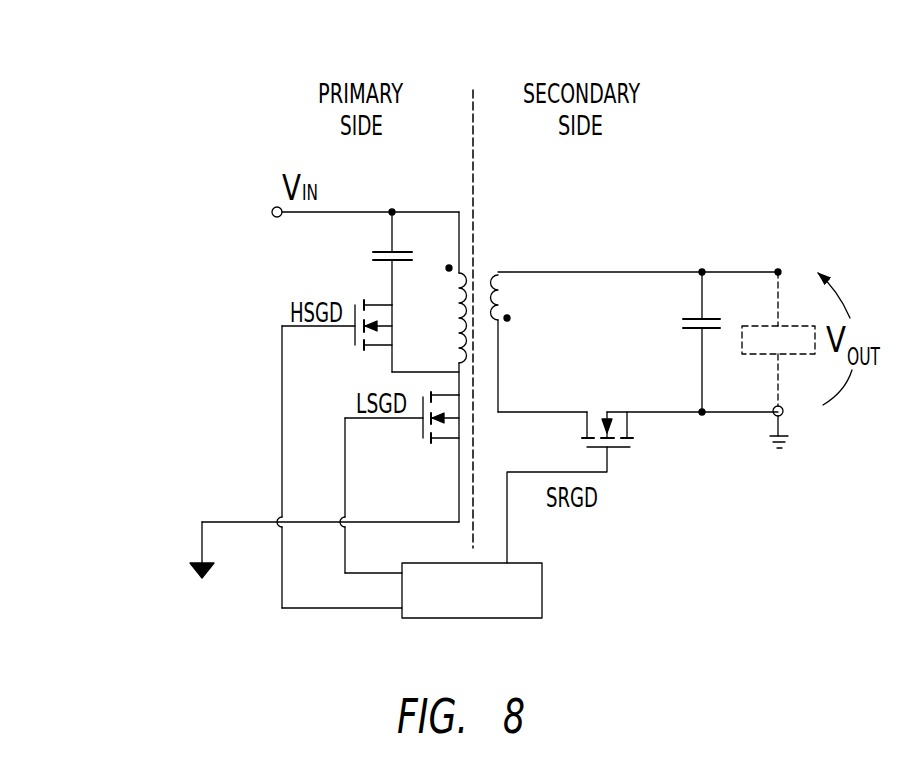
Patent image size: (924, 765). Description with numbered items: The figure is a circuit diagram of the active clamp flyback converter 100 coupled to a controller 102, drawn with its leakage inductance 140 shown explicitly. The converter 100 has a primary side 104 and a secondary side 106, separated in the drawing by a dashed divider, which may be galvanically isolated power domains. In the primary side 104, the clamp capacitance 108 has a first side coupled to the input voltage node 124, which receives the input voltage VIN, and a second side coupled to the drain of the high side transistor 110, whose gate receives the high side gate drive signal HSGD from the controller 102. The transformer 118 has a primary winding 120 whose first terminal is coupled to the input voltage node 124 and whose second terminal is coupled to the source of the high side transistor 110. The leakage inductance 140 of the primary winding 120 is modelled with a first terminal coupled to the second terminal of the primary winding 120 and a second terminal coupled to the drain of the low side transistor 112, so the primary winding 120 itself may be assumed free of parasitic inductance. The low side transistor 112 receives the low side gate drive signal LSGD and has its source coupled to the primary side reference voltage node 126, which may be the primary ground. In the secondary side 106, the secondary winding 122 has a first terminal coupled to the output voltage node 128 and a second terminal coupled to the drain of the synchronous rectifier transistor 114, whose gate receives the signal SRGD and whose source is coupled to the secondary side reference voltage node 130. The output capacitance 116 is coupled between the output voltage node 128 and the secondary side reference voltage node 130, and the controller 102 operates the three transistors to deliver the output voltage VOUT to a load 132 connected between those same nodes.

The active clamp flyback converter 100 is at (772, 178).
The controller 102 is at (542, 592).
The primary side 104 is at (262, 105).
The secondary side 106 is at (683, 105).
The clamp capacitance 108 is at (375, 250).
The high side transistor 110 is at (377, 347).
The low side transistor 112 is at (444, 440).
The synchronous rectifier transistor 114 is at (628, 422).
The output capacitance 116 is at (693, 330).
The transformer 118 is at (488, 248).
The primary winding 120 is at (450, 288).
The secondary winding 122 is at (505, 290).
The input voltage node 124 is at (275, 207).
The primary side reference voltage node 126 is at (199, 562).
The output voltage node 128 is at (780, 270).
The secondary side reference voltage node 130 is at (788, 440).
The load 132 is at (742, 337).
The leakage inductance 140 is at (452, 358).